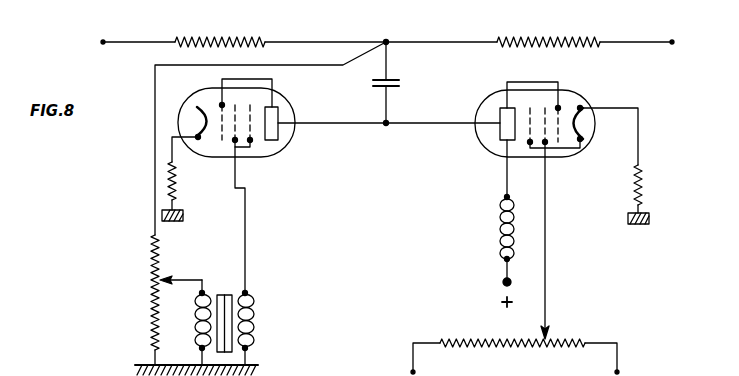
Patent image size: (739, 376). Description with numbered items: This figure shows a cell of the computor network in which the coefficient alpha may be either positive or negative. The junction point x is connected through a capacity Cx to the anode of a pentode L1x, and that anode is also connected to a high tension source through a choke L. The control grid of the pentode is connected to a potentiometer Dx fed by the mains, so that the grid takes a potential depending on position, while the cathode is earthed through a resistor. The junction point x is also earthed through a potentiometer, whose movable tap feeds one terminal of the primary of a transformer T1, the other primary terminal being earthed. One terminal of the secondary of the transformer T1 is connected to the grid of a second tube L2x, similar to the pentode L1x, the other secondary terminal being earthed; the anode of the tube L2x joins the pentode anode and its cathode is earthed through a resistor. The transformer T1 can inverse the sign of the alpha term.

The junction point x is at (385, 32).
The capacity Cx is at (397, 82).
The tube L2x is at (247, 86).
The pentode L1x is at (534, 88).
The transformer T1 is at (237, 322).
The choke L is at (496, 223).
The potentiometer Dx is at (515, 357).